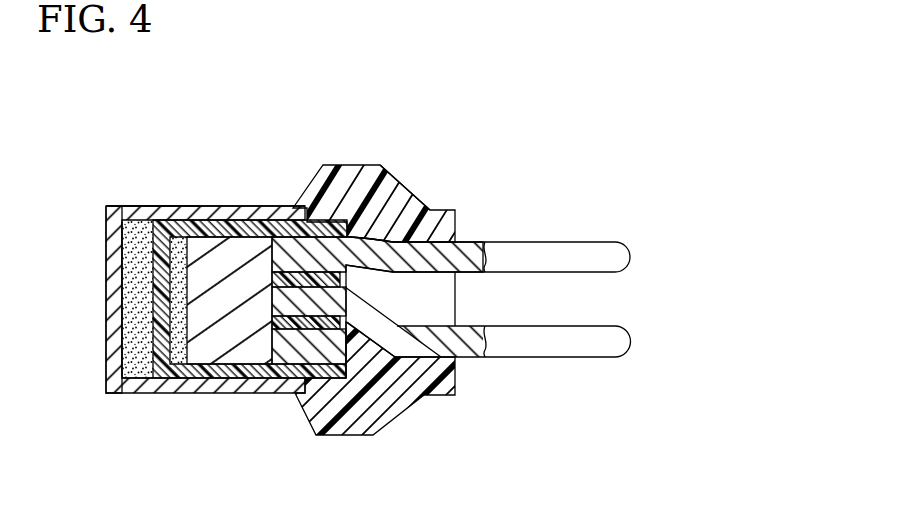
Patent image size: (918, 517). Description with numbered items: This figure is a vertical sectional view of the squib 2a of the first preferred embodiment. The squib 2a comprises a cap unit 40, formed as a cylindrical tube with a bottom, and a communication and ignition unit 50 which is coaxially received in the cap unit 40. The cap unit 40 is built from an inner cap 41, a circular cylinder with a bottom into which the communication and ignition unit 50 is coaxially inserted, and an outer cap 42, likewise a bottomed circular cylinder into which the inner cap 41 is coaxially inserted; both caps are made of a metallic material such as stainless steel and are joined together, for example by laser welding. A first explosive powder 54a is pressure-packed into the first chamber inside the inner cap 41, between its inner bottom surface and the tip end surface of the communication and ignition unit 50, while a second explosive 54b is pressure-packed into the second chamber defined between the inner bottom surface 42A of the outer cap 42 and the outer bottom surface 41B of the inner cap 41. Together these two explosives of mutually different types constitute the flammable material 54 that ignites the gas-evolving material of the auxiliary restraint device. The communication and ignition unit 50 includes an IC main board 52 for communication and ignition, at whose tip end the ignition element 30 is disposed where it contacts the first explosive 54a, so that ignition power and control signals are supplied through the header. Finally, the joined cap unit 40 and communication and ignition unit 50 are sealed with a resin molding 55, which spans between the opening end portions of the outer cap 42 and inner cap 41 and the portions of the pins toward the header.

The squib 2a is at (354, 126).
The ignition element 30 is at (183, 293).
The cap unit 40 is at (195, 181).
The inner cap 41 is at (247, 386).
The outer bottom surface of the inner cap 41B is at (151, 231).
The outer cap 42 is at (94, 352).
The inner bottom surface of the outer cap 42A is at (123, 257).
The communication and ignition unit 50 is at (551, 201).
The IC main board 52 is at (245, 220).
The flammable material 54 is at (212, 445).
The first explosive powder 54a is at (178, 381).
The second explosive 54b is at (134, 381).
The resin molding 55 is at (408, 190).